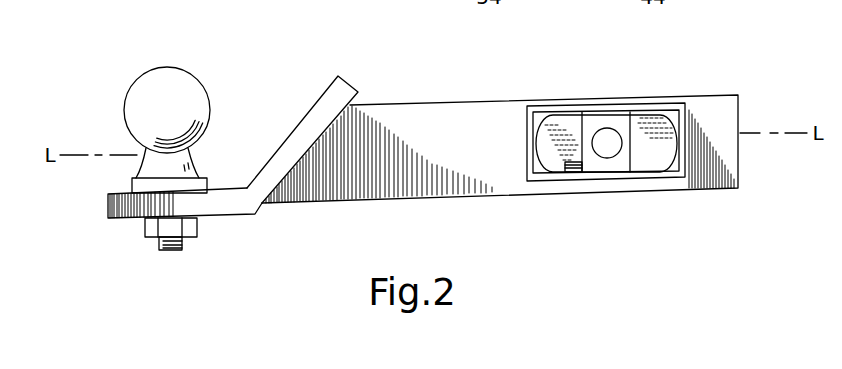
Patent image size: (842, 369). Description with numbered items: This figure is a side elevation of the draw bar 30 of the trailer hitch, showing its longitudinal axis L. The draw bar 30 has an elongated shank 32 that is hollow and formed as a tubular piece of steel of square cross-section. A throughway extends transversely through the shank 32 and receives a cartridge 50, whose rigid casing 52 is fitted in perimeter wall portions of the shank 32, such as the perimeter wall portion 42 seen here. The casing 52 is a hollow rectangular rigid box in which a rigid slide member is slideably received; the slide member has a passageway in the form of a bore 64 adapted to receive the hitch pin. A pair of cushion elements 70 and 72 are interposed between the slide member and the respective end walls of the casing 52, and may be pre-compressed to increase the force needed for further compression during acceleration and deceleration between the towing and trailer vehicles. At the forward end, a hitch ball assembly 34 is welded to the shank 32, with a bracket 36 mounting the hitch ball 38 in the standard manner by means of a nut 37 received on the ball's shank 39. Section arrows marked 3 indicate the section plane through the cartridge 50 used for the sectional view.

The draw bar 30 is at (423, 130).
The shank 32 is at (480, 92).
The hitch ball assembly 34 is at (283, 115).
The bracket 36 is at (242, 205).
The nut 37 is at (152, 228).
The hitch ball 38 is at (175, 92).
The shank 39 is at (178, 253).
The perimeter wall portion 42 is at (527, 183).
The cartridge 50 is at (653, 105).
The casing 52 is at (676, 131).
The bore 64 is at (603, 148).
The cushion element 70 is at (648, 165).
The cushion element 72 is at (562, 172).
The section line 3- 3 is at (600, 85).